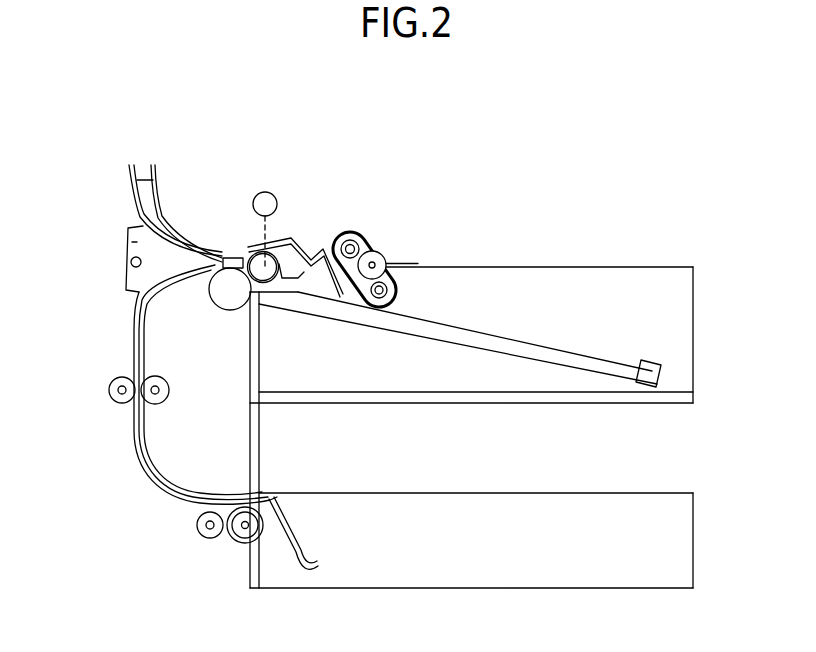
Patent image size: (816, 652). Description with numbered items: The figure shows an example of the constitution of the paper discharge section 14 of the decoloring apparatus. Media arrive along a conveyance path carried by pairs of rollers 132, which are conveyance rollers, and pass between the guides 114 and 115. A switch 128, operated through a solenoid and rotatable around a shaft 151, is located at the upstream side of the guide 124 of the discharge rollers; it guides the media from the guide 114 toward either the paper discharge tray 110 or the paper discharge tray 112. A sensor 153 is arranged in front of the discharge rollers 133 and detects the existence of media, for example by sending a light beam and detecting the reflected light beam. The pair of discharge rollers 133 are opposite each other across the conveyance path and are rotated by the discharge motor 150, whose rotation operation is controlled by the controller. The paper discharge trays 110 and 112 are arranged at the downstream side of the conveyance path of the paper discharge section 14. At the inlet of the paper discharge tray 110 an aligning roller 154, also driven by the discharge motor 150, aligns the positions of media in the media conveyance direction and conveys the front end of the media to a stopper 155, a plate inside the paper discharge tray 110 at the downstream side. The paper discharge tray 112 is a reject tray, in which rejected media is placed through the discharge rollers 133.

The paper discharge section 14 is at (569, 134).
The paper discharge tray 110 is at (647, 266).
The paper discharge tray 112 is at (693, 541).
The guide 114 is at (154, 181).
The guide 115 is at (141, 352).
The guide 124 is at (241, 250).
The switch 128 is at (127, 240).
The rollers 132 is at (108, 390).
The discharge rollers 133 is at (273, 264).
The discharge motor 150 is at (276, 199).
The shaft 151 is at (131, 262).
The sensor 153 is at (224, 256).
The aligning roller 154 is at (390, 252).
The stopper 155 is at (653, 362).